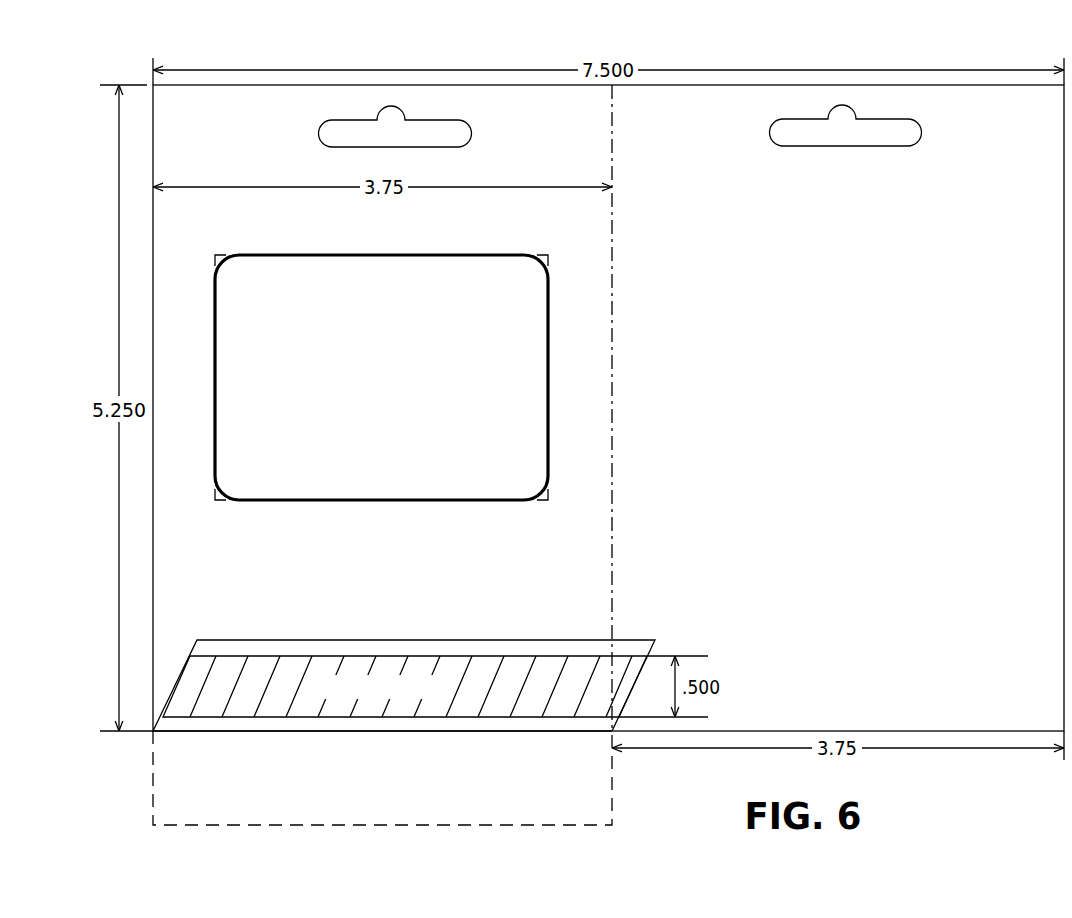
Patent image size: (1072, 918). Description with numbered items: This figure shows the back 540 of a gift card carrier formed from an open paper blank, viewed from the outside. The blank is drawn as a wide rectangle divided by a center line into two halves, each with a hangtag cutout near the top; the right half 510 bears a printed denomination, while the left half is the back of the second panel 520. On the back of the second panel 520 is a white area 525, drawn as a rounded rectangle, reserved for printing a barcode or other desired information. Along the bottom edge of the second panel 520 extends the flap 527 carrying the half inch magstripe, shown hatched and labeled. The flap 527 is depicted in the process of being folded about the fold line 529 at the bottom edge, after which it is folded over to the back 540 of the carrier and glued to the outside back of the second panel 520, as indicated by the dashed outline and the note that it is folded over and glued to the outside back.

The front panel of carrier 510 is at (821, 522).
The second panel 520 is at (358, 577).
The white area 525 is at (357, 390).
The flap 527 is at (176, 683).
The fold line 529 is at (228, 731).
The back of the carrier 540 is at (703, 85).